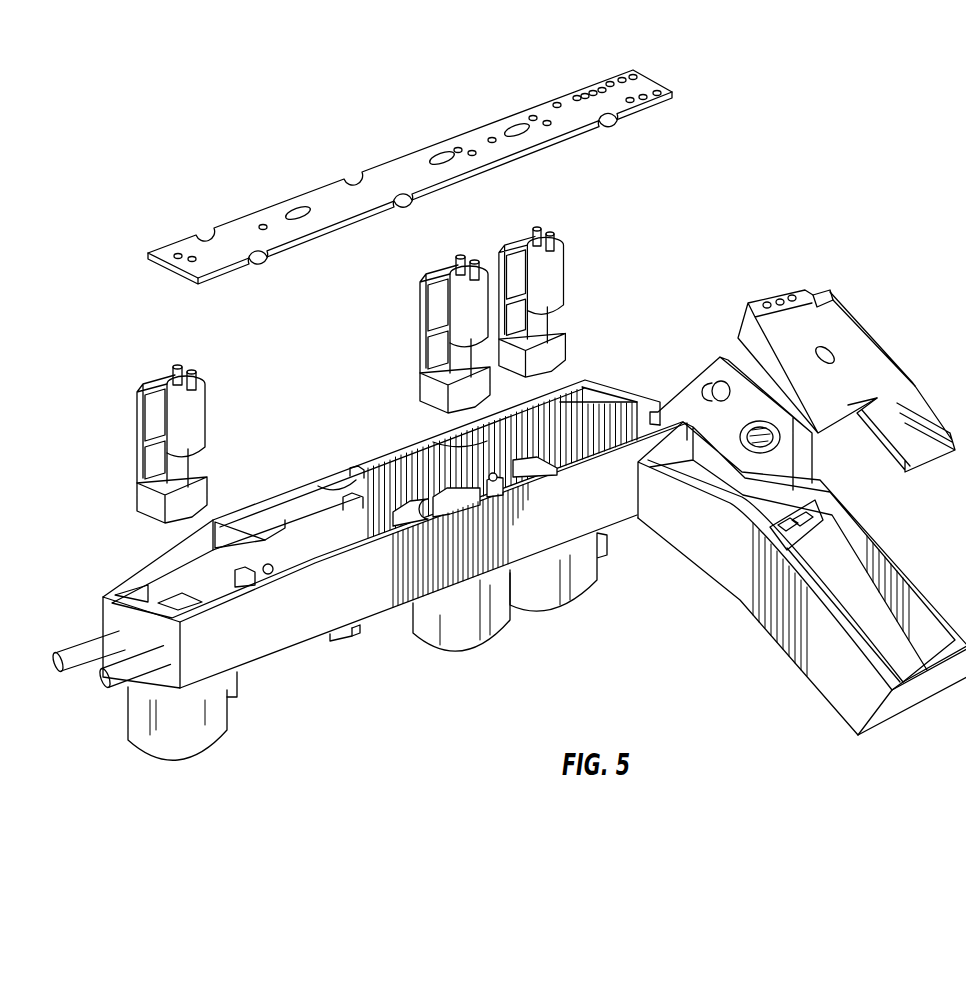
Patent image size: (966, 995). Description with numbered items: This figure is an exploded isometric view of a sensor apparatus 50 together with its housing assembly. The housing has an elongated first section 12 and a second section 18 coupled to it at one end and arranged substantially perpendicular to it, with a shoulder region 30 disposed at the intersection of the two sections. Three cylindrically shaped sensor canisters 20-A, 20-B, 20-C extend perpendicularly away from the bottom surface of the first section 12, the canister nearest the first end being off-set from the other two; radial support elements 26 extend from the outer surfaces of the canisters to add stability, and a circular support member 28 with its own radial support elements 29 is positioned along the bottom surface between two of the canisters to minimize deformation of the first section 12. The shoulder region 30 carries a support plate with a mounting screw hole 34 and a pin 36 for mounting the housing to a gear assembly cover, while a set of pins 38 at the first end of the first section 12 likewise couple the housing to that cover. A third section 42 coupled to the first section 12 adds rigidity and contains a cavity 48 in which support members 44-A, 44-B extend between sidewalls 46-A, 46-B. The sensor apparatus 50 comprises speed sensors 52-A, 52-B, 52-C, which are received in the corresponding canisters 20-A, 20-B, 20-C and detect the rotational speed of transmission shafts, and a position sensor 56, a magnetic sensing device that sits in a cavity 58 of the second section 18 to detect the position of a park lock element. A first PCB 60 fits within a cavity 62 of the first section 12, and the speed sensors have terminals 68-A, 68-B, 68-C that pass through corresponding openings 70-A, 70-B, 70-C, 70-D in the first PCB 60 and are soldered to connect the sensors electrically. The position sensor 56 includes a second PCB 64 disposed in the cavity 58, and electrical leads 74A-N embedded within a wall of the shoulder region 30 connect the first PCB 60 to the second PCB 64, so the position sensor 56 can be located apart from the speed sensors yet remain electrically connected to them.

The first section 12 is at (362, 541).
The second section 18 is at (754, 637).
The sensor canister 20-A is at (195, 742).
The sensor canister 20-B is at (481, 648).
The sensor canister 20-C is at (564, 598).
The radial support element 26 is at (231, 702).
The circular support member 28 is at (333, 635).
The radial support element 29 is at (354, 641).
The shoulder region 30 is at (790, 578).
The mounting screw hole 34 is at (770, 441).
The pin 36 is at (745, 399).
The set of pins 38 is at (76, 691).
The third section 42 is at (362, 445).
The support member 44-A is at (340, 490).
The support member 44-B is at (487, 442).
The sidewall 46-A is at (353, 472).
The sidewall 46-B is at (285, 525).
The cavity 48 is at (574, 400).
The sensor apparatus 50 is at (502, 426).
The speed sensor 52-A is at (134, 415).
The speed sensor 52-B is at (419, 304).
The speed sensor 52-C is at (566, 273).
The position sensor 56 is at (887, 328).
The cavity 58 is at (902, 618).
The first PCB 60 is at (415, 162).
The cavity 62 is at (608, 420).
The second PCB 64 is at (846, 353).
The terminal 68-A is at (187, 356).
The terminal 68-B is at (469, 250).
The terminal 68-C is at (547, 226).
The opening 70-A is at (187, 250).
The opening 70-B is at (470, 148).
The opening 70-C is at (545, 112).
The opening 70-D is at (643, 82).
The electrical leads 74A-N is at (796, 511).